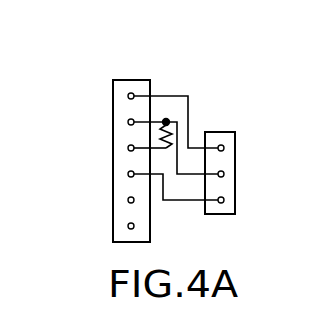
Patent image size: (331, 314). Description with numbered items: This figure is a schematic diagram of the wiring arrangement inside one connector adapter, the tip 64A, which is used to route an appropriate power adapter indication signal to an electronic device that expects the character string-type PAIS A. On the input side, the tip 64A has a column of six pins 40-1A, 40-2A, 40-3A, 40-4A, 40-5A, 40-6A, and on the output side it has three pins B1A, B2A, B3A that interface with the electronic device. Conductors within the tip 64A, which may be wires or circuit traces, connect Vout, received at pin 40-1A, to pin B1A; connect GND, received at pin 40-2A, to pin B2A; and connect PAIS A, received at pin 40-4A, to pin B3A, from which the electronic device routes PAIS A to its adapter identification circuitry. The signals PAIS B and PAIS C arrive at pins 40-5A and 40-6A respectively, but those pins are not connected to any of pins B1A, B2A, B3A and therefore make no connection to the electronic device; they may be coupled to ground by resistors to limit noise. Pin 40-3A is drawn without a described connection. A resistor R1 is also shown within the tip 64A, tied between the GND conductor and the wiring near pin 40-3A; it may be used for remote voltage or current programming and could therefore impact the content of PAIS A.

The tip 64A is at (243, 62).
The resistor R1 is at (178, 122).
The pin 40-1A is at (128, 96).
The pin 40-2A is at (128, 122).
The pin 40-3A is at (128, 148).
The pin 40-4A is at (128, 174).
The pin 40-5A is at (128, 200).
The pin 40-6A is at (128, 226).
The pin B1A is at (224, 148).
The pin B2A is at (224, 174).
The pin B3A is at (224, 200).